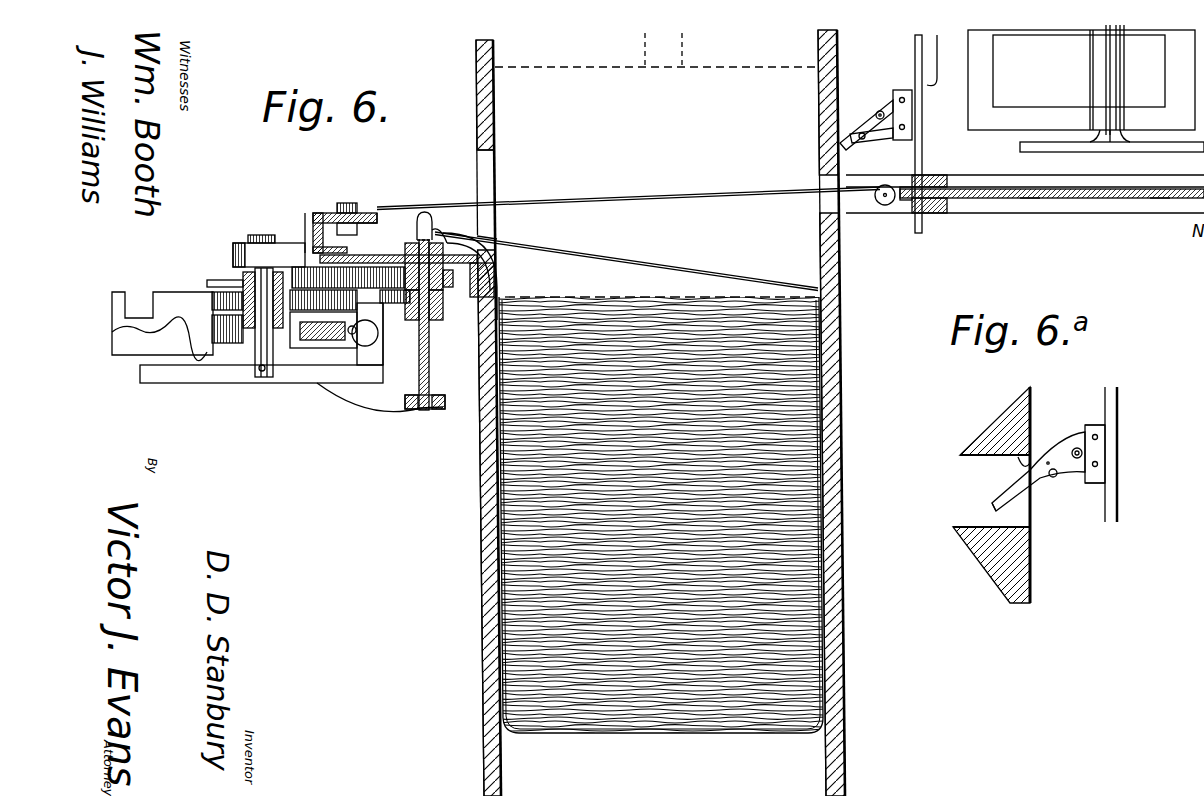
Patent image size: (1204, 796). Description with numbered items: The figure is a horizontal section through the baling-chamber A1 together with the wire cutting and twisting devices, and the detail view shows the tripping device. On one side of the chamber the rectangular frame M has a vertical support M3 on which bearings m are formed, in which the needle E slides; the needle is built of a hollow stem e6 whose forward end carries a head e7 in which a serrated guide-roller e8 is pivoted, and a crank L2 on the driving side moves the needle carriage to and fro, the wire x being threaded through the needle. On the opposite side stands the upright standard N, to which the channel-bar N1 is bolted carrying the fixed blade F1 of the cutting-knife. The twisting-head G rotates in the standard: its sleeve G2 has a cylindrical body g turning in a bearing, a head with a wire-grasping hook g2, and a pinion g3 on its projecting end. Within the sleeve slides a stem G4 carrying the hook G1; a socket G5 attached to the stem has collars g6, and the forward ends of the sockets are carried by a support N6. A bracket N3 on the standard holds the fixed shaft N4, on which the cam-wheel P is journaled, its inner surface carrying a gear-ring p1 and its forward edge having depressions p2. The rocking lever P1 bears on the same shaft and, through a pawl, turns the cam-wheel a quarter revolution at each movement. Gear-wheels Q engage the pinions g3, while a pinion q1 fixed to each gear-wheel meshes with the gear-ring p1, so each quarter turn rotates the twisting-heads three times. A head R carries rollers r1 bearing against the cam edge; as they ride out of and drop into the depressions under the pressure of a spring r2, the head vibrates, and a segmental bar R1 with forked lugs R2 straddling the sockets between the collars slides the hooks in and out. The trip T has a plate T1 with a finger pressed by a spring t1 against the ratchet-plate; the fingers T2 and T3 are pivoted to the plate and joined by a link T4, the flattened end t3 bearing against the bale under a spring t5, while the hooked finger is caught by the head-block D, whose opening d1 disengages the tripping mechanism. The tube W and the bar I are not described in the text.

In FIG. 6, the shaft A1 is at (656, 92).
In FIG. 6, the wire x is at (667, 200).
In FIG. 6, the pinion g3 is at (505, 297).
In FIG. 6, the sleeve G2 is at (496, 238).
In FIG. 6, the wire-grasping hook g2 is at (480, 233).
In FIG. 6, the fixed blade F1 is at (347, 203).
In FIG. 6, the gear-wheel Q is at (351, 238).
In FIG. 6, the upright channel-bar N1 is at (310, 228).
In FIG. 6, the upright standard N is at (375, 207).
In FIG. 6, the wire-twisting head G is at (383, 255).
In FIG. 6, the bracket N3 is at (237, 248).
In FIG. 6, the fixed shaft N4 is at (257, 350).
In FIG. 6, the rocking lever P1 is at (227, 280).
In FIG. 6, the gear-ring p1 is at (212, 306).
In FIG. 6, the cam-wheel P is at (135, 292).
In FIG. 6, the depressions p2 is at (112, 332).
In FIG. 6, the head R is at (287, 383).
In FIG. 6, the segmental bar R1 is at (360, 350).
In FIG. 6, the forked lug R2 is at (403, 300).
In FIG. 6, the pinion q1 is at (327, 312).
In FIG. 6, the rollers r1 is at (352, 330).
In FIG. 6, the spring r2 is at (410, 406).
In FIG. 6, the hook G1 is at (424, 215).
In FIG. 6, the socket G5 is at (432, 378).
In FIG. 6, the stem G4 is at (427, 362).
In FIG. 6, the collars g6 is at (443, 324).
In FIG. 6, the support N6 is at (440, 409).
In FIG. 6, the tube W is at (498, 272).
In FIG. 6, the cylindrical body g is at (498, 252).
In FIG. 6, the bar I is at (915, 38).
In FIG. 6, the finger T2 is at (890, 100).
In FIG. 6A, the finger T2 is at (1090, 425).
In FIG. 6, the plate T1 is at (912, 108).
In FIG. 6A, the plate T1 is at (1105, 452).
In FIG. 6, the trip T is at (912, 140).
In FIG. 6A, the trip T is at (1118, 430).
In FIG. 6, the finger T3 is at (866, 133).
In FIG. 6A, the finger T3 is at (1105, 476).
In FIG. 6, the vertical support M3 is at (930, 180).
In FIG. 6, the bearings m is at (940, 213).
In FIG. 6, the box L is at (1107, 60).
In FIG. 6, the crank L2 is at (1112, 159).
In FIG. 6, the needle E is at (1094, 200).
In FIG. 6, the hollow stem e6 is at (1031, 199).
In FIG. 6, the rectangular frame M is at (1157, 200).
In FIG. 6, the serrated guide-roller e8 is at (883, 206).
In FIG. 6, the head e7 is at (905, 201).
In FIG. 6A, the head-block D is at (974, 495).
In FIG. 6A, the spring t1 is at (1018, 465).
In FIG. 6A, the spring t5 is at (1075, 448).
In FIG. 6A, the flattened end t3 is at (1015, 488).
In FIG. 6A, the opening d1 is at (992, 507).
In FIG. 6A, the link T4 is at (1090, 484).